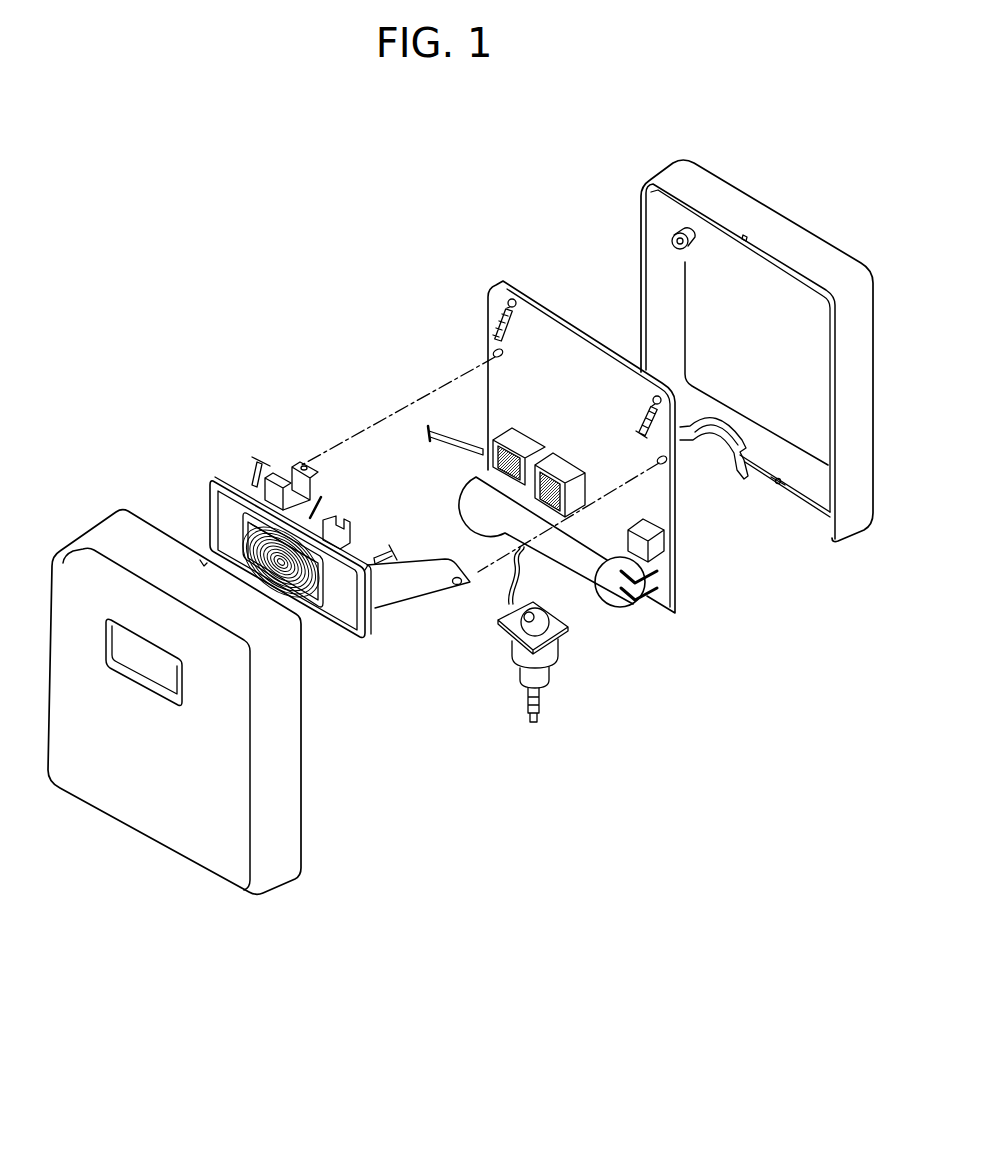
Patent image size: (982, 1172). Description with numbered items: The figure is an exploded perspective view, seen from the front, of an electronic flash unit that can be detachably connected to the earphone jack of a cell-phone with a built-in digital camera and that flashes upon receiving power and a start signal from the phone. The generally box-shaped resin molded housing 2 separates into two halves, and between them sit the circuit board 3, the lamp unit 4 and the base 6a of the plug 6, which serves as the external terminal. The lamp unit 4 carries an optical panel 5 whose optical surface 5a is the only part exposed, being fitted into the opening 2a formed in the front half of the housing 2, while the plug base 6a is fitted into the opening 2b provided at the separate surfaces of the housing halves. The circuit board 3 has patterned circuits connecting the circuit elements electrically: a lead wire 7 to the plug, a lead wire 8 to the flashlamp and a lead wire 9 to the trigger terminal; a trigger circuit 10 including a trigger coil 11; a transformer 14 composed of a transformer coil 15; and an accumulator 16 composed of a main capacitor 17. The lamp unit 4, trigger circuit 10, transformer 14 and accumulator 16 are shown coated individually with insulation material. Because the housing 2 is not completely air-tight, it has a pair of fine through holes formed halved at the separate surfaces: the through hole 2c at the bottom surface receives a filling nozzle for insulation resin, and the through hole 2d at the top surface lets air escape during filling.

The housing 2 is at (128, 532).
The opening 2a is at (157, 690).
The opening 2b is at (719, 444).
The through hole 2c is at (779, 485).
The through hole 2d is at (195, 560).
The circuit board 3 is at (589, 327).
The lamp unit 4 is at (380, 648).
The optical panel 5 is at (223, 496).
The optical surface 5a is at (242, 533).
The plug 6 is at (552, 655).
The base 6a is at (568, 630).
The lead wire 7 is at (507, 598).
The lead wire 8 is at (500, 341).
The lead wire 9 is at (321, 499).
The trigger circuit 10 is at (568, 443).
The trigger coil 11 is at (523, 436).
The transformer 14 is at (668, 556).
The transformer coil 15 is at (665, 537).
The accumulator 16 is at (657, 603).
The main capacitor 17 is at (617, 608).